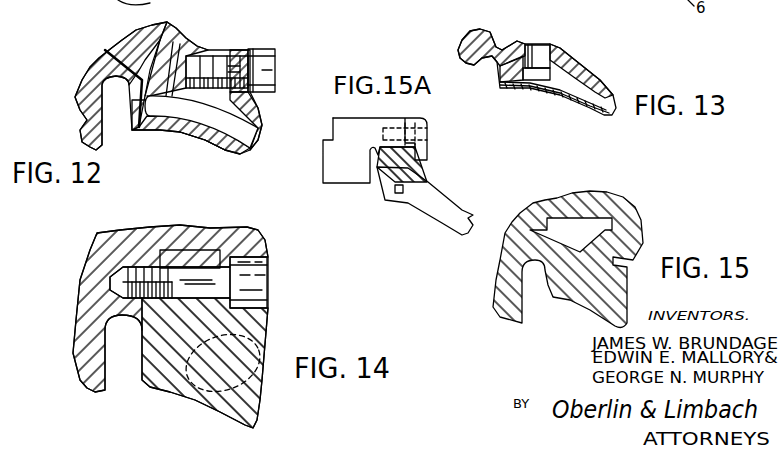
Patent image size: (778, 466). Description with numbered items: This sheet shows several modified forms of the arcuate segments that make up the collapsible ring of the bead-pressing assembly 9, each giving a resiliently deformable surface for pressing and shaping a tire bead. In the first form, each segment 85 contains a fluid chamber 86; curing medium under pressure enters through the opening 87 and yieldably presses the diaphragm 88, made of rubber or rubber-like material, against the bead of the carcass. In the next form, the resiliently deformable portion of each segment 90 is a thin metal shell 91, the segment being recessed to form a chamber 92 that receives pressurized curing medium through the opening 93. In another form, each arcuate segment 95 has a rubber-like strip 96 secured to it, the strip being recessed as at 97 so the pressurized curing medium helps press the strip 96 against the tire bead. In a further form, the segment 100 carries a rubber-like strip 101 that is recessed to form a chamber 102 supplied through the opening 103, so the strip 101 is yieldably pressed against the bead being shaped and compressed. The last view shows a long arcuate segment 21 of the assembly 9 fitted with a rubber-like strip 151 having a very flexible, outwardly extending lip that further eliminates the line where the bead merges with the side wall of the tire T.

In FIG. 12, the segment 85 is at (208, 48).
In FIG. 12, the fluid chamber 86 is at (201, 122).
In FIG. 12, the opening 87 is at (173, 38).
In FIG. 12, the diaphragm 88 is at (190, 128).
In FIG. 13, the segment 90 is at (567, 58).
In FIG. 13, the thin metal shell 91 is at (575, 95).
In FIG. 13, the chamber 92 is at (567, 83).
In FIG. 13, the opening 93 is at (537, 50).
In FIG. 15A, the bottom bead-pressing assembly 9 is at (329, 119).
In FIG. 15A, the long arcuate segment 21 is at (415, 118).
In FIG. 15A, the rubber-like strip 151 is at (382, 170).
In FIG. 15A, the tooth T is at (445, 210).
In FIG. 14, the arcuate segment 95 is at (248, 232).
In FIG. 14, the rubber-like strip 96 is at (220, 397).
In FIG. 14, the recess 97 is at (257, 347).
In FIG. 15, the segment 100 is at (573, 193).
In FIG. 15, the rubber-like strip 101 is at (582, 300).
In FIG. 15, the chamber 102 is at (565, 216).
In FIG. 15, the opening 103 is at (623, 203).